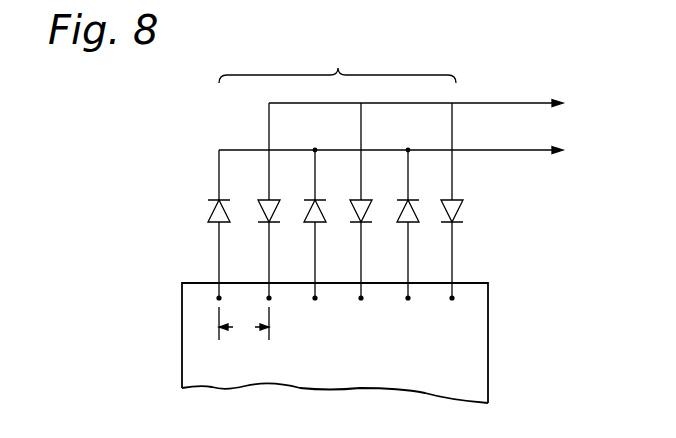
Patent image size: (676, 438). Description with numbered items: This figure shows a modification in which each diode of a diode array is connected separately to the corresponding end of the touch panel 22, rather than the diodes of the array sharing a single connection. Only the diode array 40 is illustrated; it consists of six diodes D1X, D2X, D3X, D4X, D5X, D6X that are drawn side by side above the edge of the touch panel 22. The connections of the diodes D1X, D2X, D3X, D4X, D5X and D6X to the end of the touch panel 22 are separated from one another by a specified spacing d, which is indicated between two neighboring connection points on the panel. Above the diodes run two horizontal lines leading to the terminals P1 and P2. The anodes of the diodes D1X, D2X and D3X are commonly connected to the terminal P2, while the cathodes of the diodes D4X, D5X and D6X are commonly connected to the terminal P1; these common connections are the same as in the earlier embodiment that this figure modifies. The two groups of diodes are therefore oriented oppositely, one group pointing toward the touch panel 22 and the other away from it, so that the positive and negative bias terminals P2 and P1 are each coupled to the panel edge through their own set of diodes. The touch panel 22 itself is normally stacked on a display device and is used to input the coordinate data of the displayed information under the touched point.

The diode array 40 is at (337, 63).
The touch panel 22 is at (488, 340).
The diode Dx1 D1X is at (460, 210).
The diode Dx2 D2X is at (368, 210).
The diode Dx3 D3X is at (275, 210).
The diode Dx4 D4X is at (412, 212).
The diode Dx5 D5X is at (321, 204).
The diode Dx6 D6X is at (225, 204).
The terminal p1 P1 is at (412, 152).
The terminal p2 P2 is at (437, 107).
The spacing d is at (244, 323).